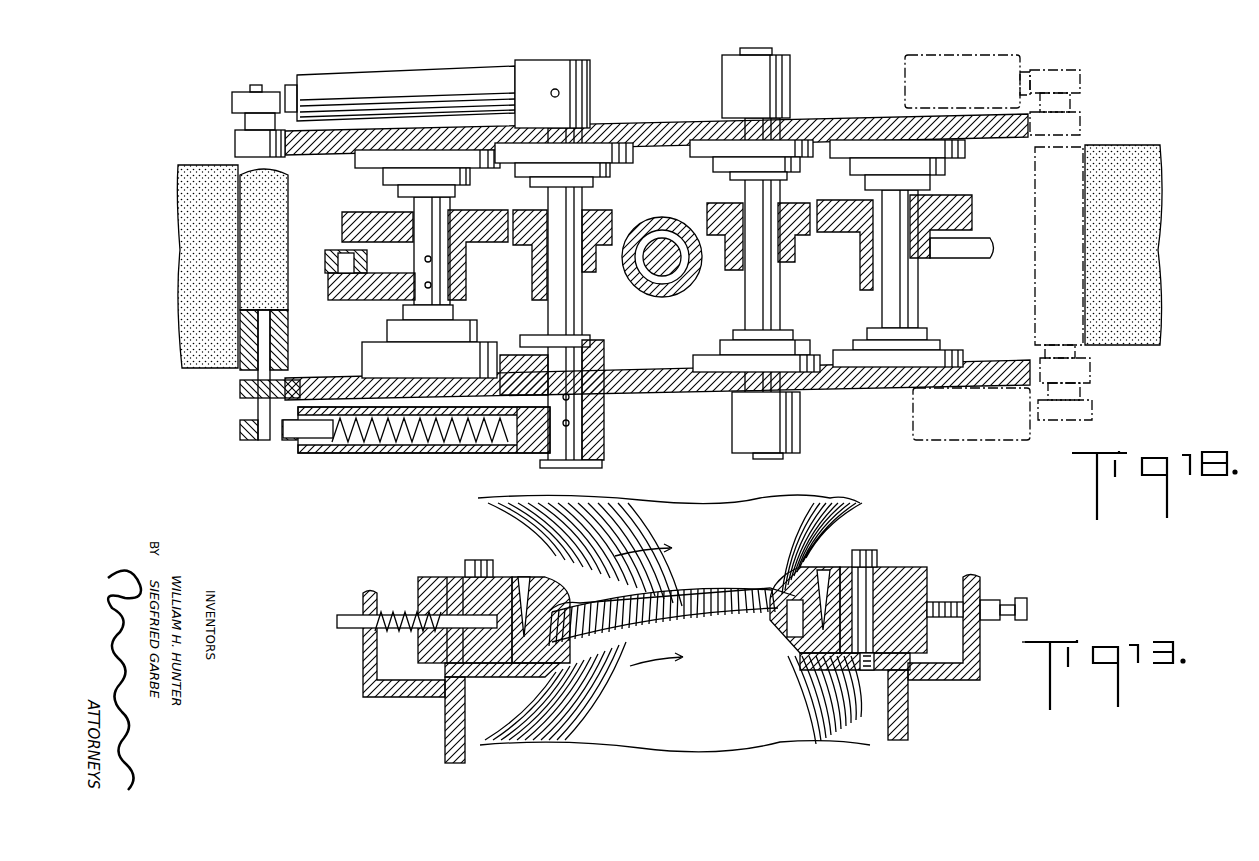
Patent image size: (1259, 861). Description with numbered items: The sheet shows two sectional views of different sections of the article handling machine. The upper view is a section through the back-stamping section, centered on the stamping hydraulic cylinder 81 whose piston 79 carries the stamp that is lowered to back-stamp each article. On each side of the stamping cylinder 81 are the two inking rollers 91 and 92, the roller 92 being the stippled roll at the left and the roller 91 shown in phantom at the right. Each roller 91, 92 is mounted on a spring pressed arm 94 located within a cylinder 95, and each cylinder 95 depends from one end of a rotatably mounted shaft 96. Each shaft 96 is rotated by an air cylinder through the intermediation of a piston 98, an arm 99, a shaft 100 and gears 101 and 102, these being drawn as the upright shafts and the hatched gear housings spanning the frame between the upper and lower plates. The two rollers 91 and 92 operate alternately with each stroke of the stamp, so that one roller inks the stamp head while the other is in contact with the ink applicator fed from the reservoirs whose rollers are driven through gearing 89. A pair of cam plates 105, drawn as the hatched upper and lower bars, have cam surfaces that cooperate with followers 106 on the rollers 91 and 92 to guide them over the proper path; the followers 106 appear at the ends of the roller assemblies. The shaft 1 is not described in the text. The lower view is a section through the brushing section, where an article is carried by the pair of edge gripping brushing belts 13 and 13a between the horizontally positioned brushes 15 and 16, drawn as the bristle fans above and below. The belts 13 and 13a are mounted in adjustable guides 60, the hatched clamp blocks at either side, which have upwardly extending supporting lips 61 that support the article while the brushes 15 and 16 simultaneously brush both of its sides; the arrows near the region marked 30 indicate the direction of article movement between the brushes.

In FIG. 16, the cylinder 95 is at (448, 78).
In FIG. 16, the follower 106 is at (234, 146).
In FIG. 16, the cam plate 105 is at (328, 156).
In FIG. 16, the inking roller 92 is at (290, 208).
In FIG. 16, the piston 98 is at (325, 261).
In FIG. 16, the gear 101 is at (480, 215).
In FIG. 16, the gear 102 is at (605, 212).
In FIG. 16, the hydraulic cylinder 81 is at (668, 218).
In FIG. 16, the inking roller 91 is at (1065, 168).
In FIG. 16, the shaft 1 is at (975, 260).
In FIG. 16, the shaft 100 is at (450, 320).
In FIG. 16, the shaft 96 is at (582, 312).
In FIG. 16, the piston 79 is at (658, 280).
In FIG. 16, the gearing 89 is at (212, 370).
In FIG. 16, the spring pressed arm 94 is at (305, 452).
In FIG. 16, the arm 99 is at (385, 296).
In FIG. 13, the brush 15 is at (787, 512).
In FIG. 13, the adjustable guide 60 is at (451, 561).
In FIG. 13, the fibrous sheet 30 is at (663, 594).
In FIG. 13, the brushing belt 13a is at (792, 580).
In FIG. 13, the brushing belt 13 is at (556, 602).
In FIG. 13, the supporting lip 61 is at (578, 668).
In FIG. 13, the brush 16 is at (694, 724).